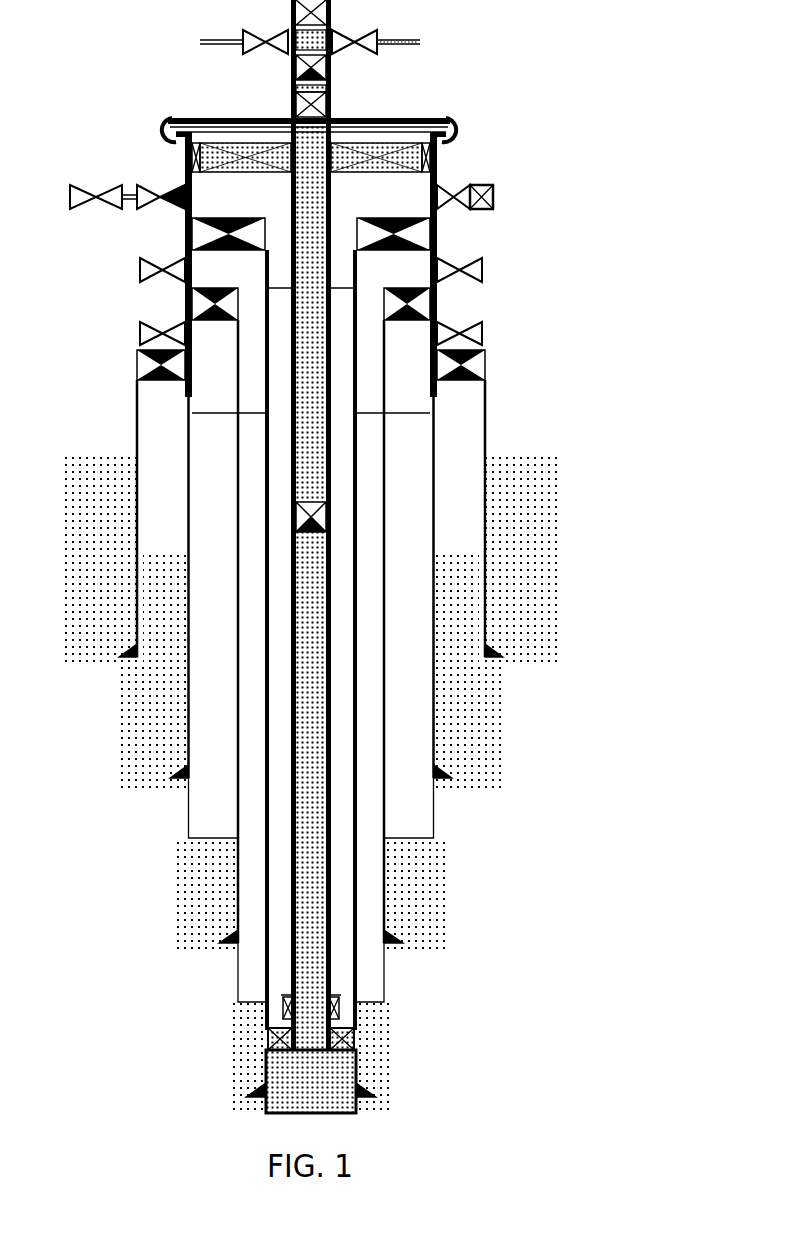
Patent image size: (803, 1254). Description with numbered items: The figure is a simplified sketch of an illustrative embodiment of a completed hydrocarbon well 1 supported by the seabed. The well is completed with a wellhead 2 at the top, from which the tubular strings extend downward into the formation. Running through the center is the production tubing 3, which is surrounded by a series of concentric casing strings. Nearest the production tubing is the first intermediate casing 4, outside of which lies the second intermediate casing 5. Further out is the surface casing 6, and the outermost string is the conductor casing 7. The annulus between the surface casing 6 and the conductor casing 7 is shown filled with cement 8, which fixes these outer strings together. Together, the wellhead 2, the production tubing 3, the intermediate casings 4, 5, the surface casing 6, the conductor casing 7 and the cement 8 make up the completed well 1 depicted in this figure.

The completed hydrocarbon well 1 is at (583, 73).
The wellhead 2 is at (460, 128).
The production tubing 3 is at (327, 220).
The first intermediate casing 4 is at (368, 303).
The second intermediate casing 5 is at (383, 387).
The surface casing 6 is at (435, 468).
The conductor casing 7 is at (485, 585).
The cement 8 is at (470, 702).